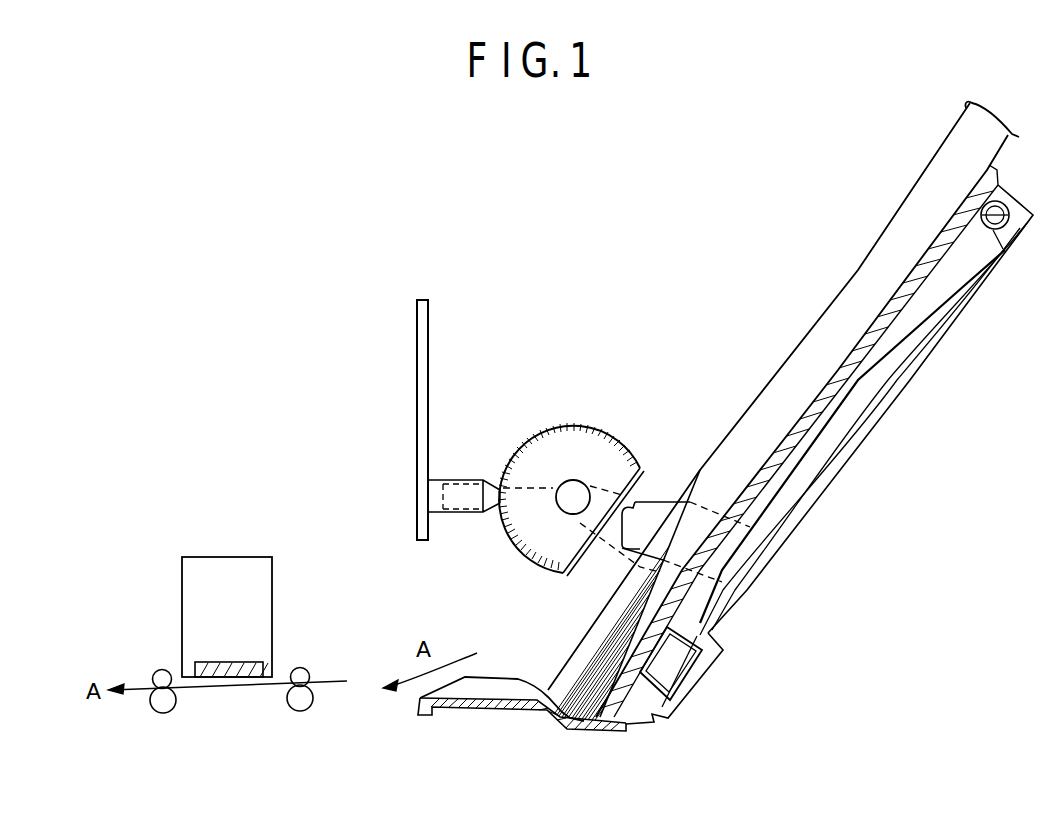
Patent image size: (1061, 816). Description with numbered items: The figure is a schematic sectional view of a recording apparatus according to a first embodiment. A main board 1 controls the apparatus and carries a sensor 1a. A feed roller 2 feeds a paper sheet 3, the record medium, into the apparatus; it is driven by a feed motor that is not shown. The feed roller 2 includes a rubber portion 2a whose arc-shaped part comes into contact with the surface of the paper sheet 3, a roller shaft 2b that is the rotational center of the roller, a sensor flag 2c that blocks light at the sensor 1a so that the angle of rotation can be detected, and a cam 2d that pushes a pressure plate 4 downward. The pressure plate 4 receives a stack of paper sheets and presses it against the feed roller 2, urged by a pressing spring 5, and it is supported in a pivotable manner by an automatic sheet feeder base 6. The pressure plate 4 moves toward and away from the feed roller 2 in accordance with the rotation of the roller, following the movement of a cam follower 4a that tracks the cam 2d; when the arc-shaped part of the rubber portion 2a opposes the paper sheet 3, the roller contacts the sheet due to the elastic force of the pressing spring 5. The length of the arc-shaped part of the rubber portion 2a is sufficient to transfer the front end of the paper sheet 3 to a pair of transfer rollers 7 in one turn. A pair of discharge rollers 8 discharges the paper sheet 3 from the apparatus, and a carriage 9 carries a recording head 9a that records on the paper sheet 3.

The main board 1 is at (430, 300).
The sensor 1a is at (458, 490).
The feed roller 2 is at (597, 447).
The rubber portion 2a is at (587, 422).
The roller shaft 2b is at (580, 490).
The sensor flag 2c is at (493, 505).
The cam 2d is at (620, 530).
The paper sheet 3 is at (884, 182).
The pressure plate 4 is at (905, 288).
The cam follower 4a is at (638, 538).
The pressing spring 5 is at (717, 641).
The automatic sheet feeder base 6 is at (912, 377).
The pair of transfer rollers 7 is at (313, 706).
The pair of discharge rollers 8 is at (176, 711).
The carriage 9 is at (225, 565).
The recording head 9a is at (208, 660).